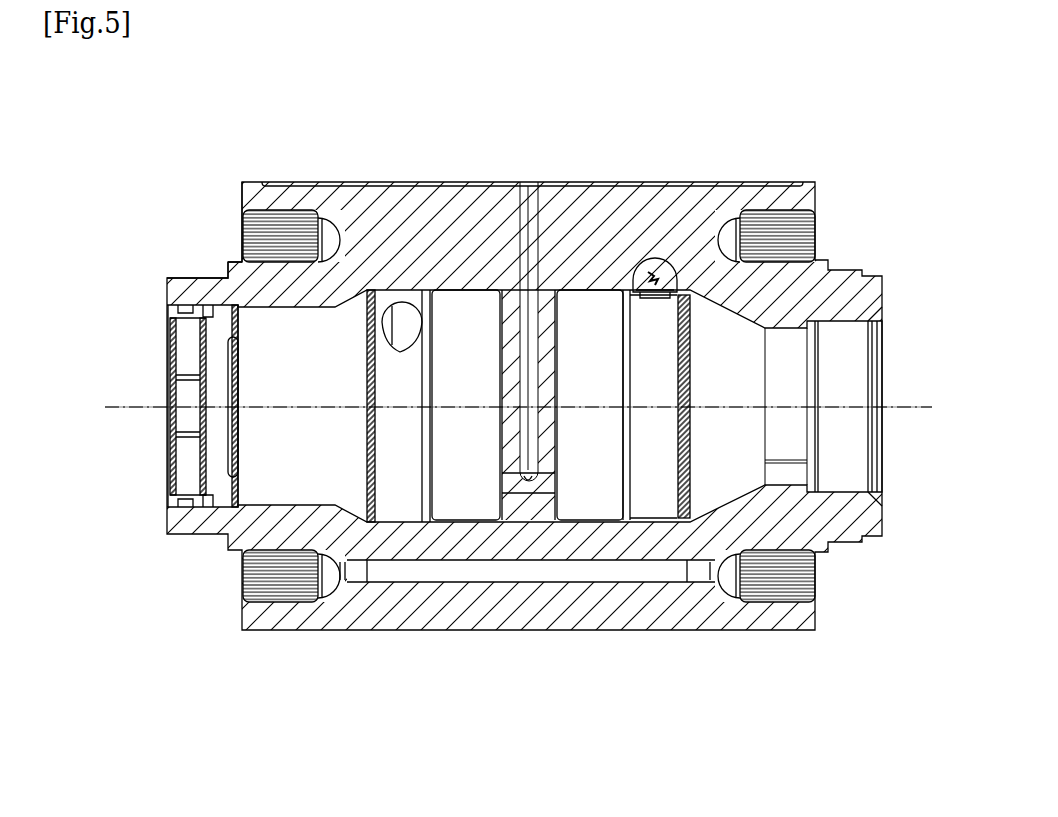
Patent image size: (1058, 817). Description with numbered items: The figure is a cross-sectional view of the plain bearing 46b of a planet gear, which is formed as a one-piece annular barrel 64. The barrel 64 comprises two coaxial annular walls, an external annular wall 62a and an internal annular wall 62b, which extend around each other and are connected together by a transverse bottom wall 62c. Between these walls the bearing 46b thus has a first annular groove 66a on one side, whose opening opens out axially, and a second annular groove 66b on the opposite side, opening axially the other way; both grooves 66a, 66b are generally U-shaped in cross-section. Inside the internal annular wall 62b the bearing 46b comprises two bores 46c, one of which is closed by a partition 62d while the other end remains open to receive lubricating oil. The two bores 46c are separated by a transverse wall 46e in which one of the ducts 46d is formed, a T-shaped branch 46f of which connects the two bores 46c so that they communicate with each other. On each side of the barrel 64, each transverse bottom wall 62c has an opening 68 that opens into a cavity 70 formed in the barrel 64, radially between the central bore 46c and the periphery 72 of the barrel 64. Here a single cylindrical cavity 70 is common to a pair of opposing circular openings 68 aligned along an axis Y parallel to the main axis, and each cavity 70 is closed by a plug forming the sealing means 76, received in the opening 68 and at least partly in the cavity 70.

The plain bearing 46b is at (528, 164).
The bore 46c is at (528, 406).
The duct 46d is at (402, 352).
The transverse wall 46e is at (546, 300).
The T-shaped branch 46f is at (542, 482).
The external annular wall 62a is at (260, 200).
The internal annular wall 62b is at (232, 288).
The transverse bottom wall 62c is at (748, 216).
The partition 62d is at (217, 400).
The annular barrel 64 is at (600, 223).
The first annular groove 66a is at (265, 600).
The second annular groove 66b is at (803, 598).
The opening 68 is at (343, 582).
The cavity 70 is at (587, 582).
The periphery 72 is at (368, 182).
The sealing means 76 is at (362, 584).
The axis Y is at (908, 410).